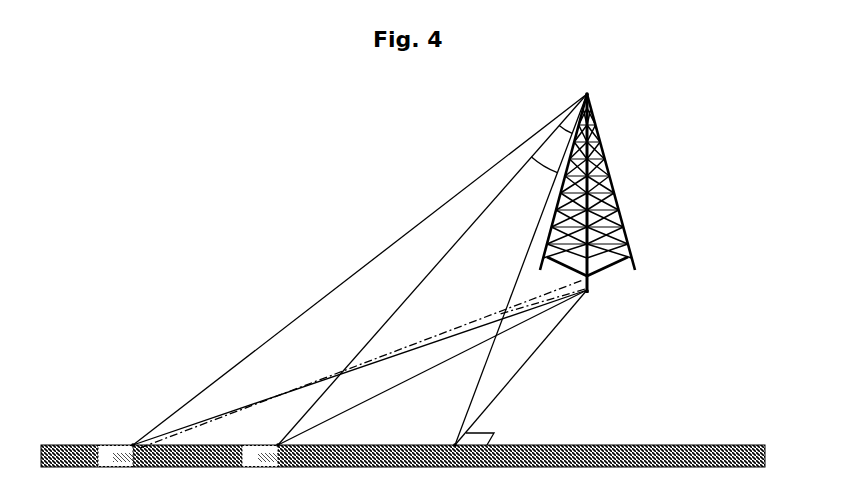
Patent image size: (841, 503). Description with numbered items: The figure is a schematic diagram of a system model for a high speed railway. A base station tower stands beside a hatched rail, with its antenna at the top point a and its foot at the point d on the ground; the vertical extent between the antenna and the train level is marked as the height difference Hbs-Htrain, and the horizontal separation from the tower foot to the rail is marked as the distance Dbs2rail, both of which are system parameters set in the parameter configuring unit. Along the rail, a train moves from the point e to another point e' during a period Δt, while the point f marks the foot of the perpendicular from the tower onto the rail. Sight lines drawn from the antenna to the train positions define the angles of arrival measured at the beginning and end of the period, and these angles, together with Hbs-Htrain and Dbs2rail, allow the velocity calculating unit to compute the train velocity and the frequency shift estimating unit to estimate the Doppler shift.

The base station antenna point a is at (587, 81).
The base station tower foot point d is at (602, 306).
The point e is at (122, 429).
The another point e' is at (267, 429).
The foot of perpendicular on rail f is at (461, 430).
The height difference between BS and train Hbs-Htrain is at (700, 95).
The distance between BS and rail Dbs2rail is at (403, 417).